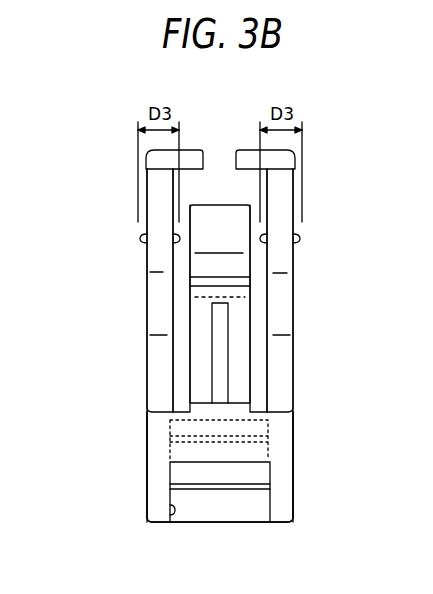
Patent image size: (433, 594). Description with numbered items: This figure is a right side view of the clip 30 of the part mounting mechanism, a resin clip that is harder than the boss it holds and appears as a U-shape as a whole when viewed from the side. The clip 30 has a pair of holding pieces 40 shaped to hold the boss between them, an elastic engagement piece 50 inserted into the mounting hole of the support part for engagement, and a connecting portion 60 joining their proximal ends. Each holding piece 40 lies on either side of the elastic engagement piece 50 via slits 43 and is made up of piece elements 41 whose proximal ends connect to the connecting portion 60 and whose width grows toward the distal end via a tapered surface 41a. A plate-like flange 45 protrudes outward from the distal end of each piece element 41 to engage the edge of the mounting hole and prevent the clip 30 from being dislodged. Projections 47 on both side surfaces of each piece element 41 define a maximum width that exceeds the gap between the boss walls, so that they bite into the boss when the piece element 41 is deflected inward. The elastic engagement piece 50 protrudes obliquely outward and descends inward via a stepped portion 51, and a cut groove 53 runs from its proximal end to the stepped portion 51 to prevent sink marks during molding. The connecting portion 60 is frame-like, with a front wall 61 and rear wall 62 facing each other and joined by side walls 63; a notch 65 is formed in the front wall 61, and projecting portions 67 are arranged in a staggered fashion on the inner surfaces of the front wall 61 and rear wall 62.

The clip 30 is at (355, 192).
The holding piece 40 is at (148, 352).
The piece element 41 is at (288, 377).
The tapered surface 41a is at (150, 317).
The slit 43 is at (163, 290).
The flange 45 is at (155, 159).
The projection 47 is at (140, 238).
The elastic engagement piece 50 is at (257, 352).
The stepped portion 51 is at (205, 263).
The cut groove 53 is at (220, 383).
The connecting portion 60 is at (305, 470).
The front wall 61 is at (252, 450).
The rear wall 62 is at (262, 510).
The side wall 63 is at (147, 443).
The notch 65 is at (172, 510).
The projecting portion 67 is at (170, 472).